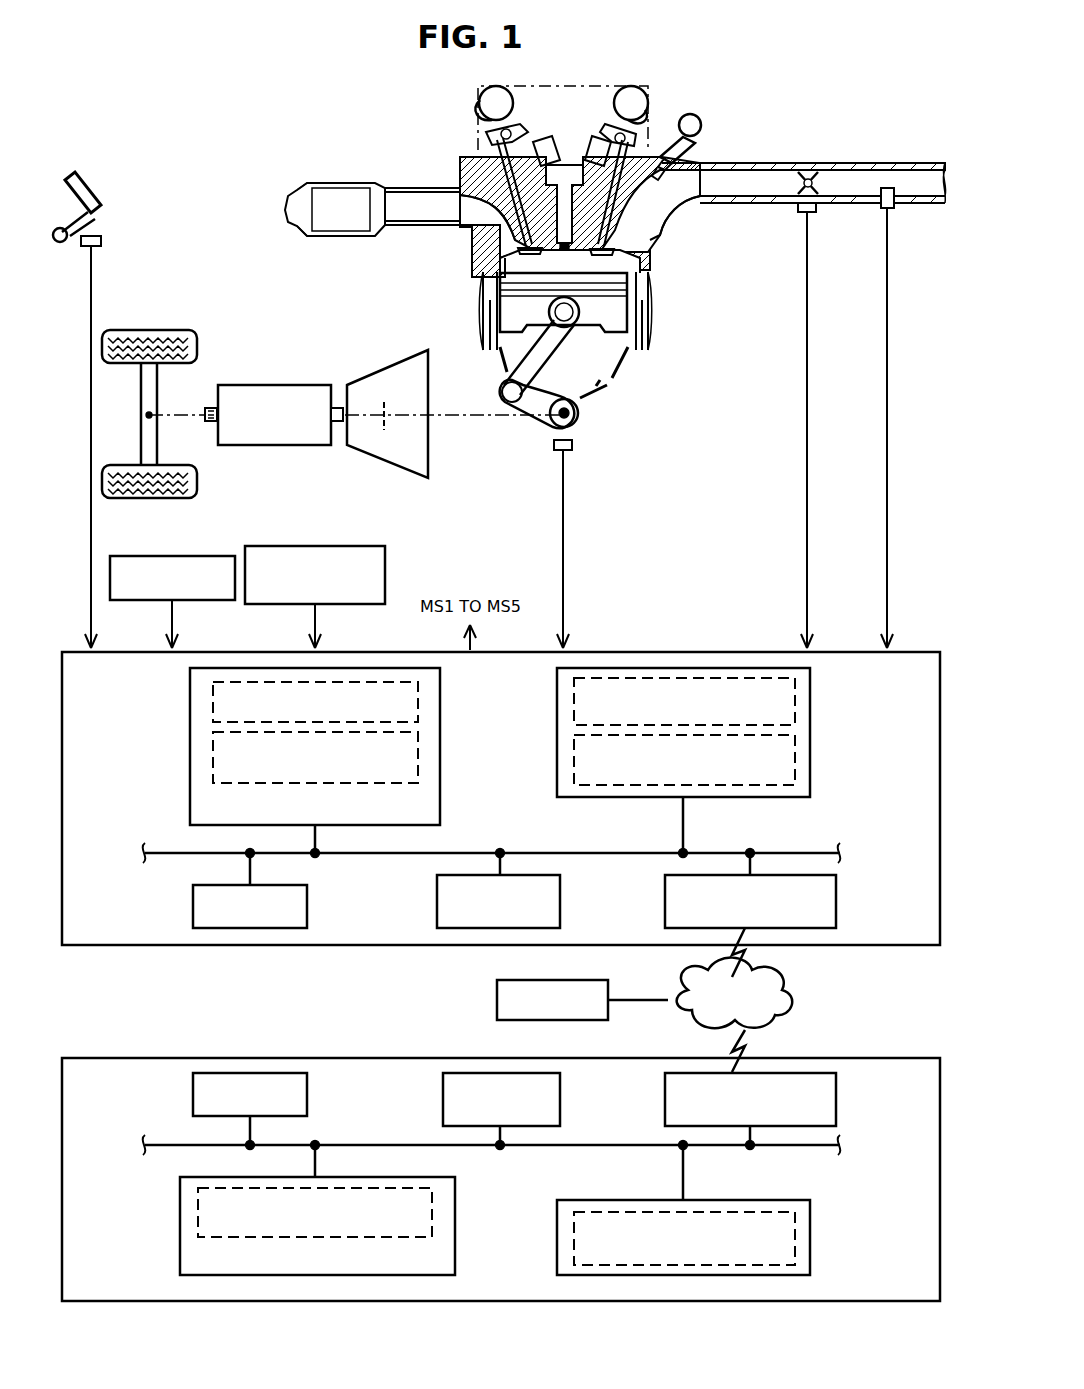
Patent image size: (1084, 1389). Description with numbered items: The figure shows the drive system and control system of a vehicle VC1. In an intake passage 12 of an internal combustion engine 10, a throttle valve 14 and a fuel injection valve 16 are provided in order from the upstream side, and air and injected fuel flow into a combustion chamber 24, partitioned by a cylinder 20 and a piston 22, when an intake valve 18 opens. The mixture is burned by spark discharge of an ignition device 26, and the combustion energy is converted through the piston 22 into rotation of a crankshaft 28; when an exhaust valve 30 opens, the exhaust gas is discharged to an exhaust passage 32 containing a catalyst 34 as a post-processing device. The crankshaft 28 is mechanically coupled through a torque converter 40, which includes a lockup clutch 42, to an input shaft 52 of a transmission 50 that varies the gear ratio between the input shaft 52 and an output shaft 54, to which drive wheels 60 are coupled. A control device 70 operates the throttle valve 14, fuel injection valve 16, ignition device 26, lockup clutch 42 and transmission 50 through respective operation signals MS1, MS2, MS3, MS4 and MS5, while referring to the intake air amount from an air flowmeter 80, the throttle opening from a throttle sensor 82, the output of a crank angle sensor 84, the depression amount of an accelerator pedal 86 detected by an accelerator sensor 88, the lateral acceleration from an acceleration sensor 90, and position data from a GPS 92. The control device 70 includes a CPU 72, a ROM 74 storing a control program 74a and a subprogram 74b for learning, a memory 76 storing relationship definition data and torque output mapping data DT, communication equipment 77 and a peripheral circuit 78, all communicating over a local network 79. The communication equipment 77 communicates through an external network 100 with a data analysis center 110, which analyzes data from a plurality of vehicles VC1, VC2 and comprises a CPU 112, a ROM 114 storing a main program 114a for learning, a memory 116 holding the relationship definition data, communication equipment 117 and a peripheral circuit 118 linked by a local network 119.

The internal combustion engine 10 is at (718, 78).
The intake passage 12 is at (946, 203).
The throttle valve 14 is at (812, 180).
The fuel injection valve 16 is at (685, 172).
The intake valve 18 is at (652, 240).
The cylinder 20 is at (645, 278).
The piston 22 is at (615, 312).
The combustion chamber 24 is at (494, 280).
The ignition device 26 is at (549, 165).
The crankshaft 28 is at (564, 400).
The exhaust valve 30 is at (512, 218).
The exhaust passage 32 is at (422, 196).
The catalyst 34 is at (338, 187).
The torque converter 40 is at (378, 376).
The lockup clutch 42 is at (392, 418).
The transmission 50 is at (265, 384).
The input shaft 52 is at (330, 414).
The output shaft 54 is at (207, 406).
The drive wheels 60 is at (174, 334).
The control device 70 is at (682, 650).
The CPU 72 is at (308, 905).
The ROM 74 is at (440, 672).
The control program 74a is at (418, 710).
The subprogram for learning 74b is at (418, 758).
The memory 76 is at (810, 672).
The communication equipment 77 is at (836, 905).
The peripheral circuit 78 is at (561, 905).
The local network 79 is at (782, 856).
The air flowmeter 80 is at (895, 208).
The throttle sensor 82 is at (816, 213).
The crank angle sensor 84 is at (572, 445).
The accelerator pedal 86 is at (65, 182).
The accelerator sensor 88 is at (108, 240).
The acceleration sensor 90 is at (333, 545).
The GPS 92 is at (175, 556).
The external network 100 is at (795, 1002).
The data analysis center 110 is at (906, 1058).
The CPU 112 is at (308, 1093).
The ROM 114 is at (455, 1177).
The main program for learning 114a is at (432, 1220).
The memory 116 is at (810, 1201).
The communication equipment 117 is at (836, 1101).
The peripheral circuit 118 is at (560, 1094).
The local network 119 is at (777, 1150).
The operation signal of throttle valve MS1 is at (800, 170).
The operation signal of fuel injection valve MS2 is at (717, 120).
The operation signal of ignition device MS3 is at (577, 150).
The operation signal of lockup clutch MS4 is at (404, 394).
The operation signal of transmission MS5 is at (276, 466).
The torque output mapping data DT is at (795, 765).
The vehicle VC1 is at (912, 468).
The vehicle VC2 is at (492, 1000).